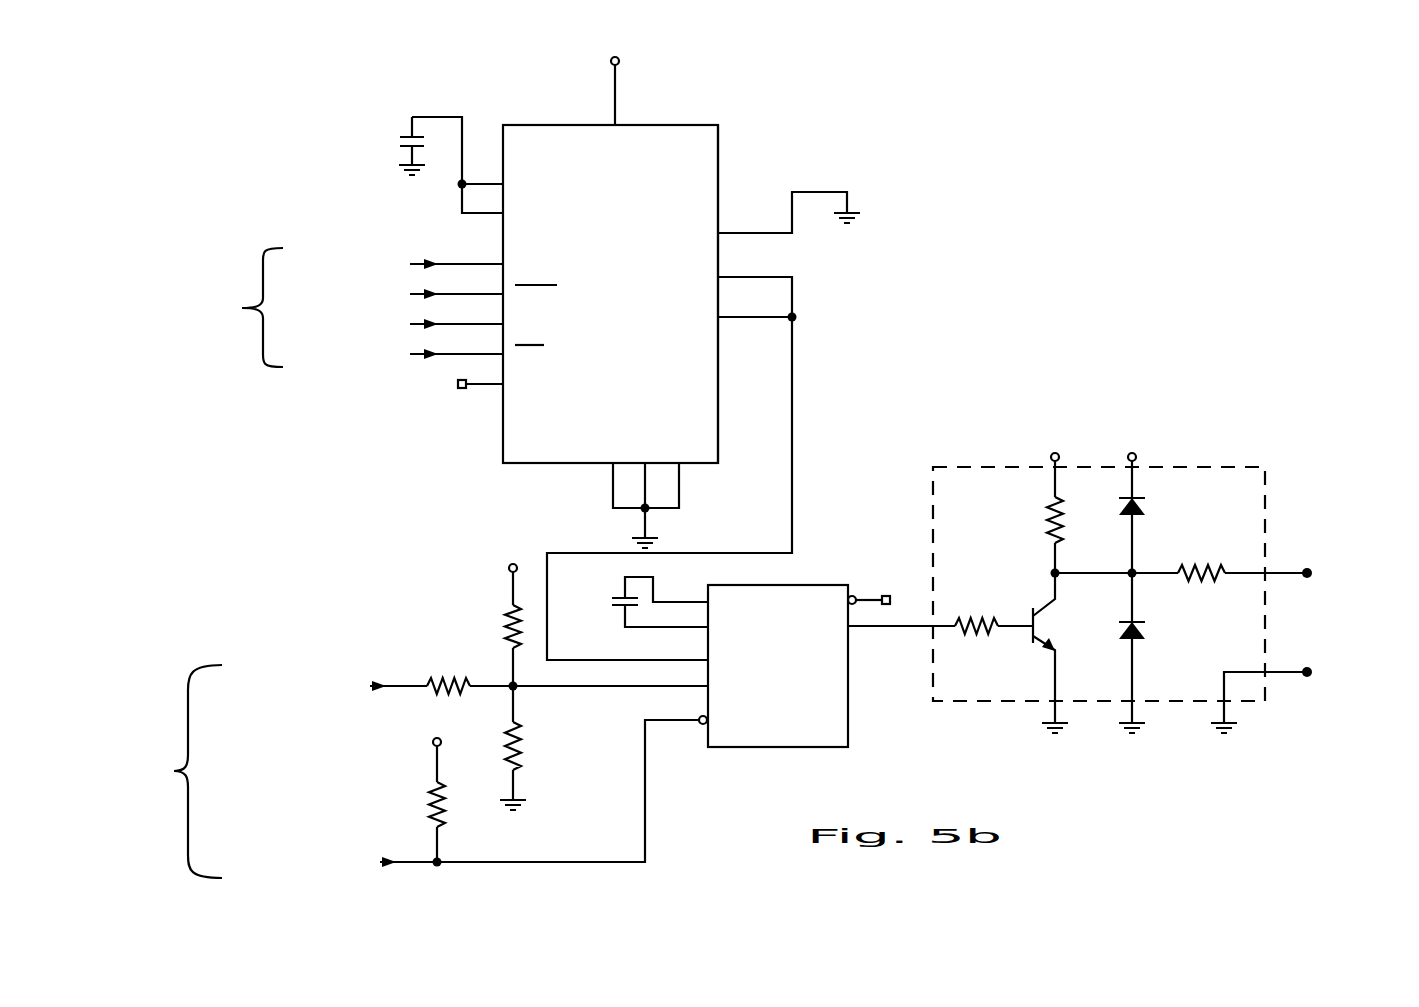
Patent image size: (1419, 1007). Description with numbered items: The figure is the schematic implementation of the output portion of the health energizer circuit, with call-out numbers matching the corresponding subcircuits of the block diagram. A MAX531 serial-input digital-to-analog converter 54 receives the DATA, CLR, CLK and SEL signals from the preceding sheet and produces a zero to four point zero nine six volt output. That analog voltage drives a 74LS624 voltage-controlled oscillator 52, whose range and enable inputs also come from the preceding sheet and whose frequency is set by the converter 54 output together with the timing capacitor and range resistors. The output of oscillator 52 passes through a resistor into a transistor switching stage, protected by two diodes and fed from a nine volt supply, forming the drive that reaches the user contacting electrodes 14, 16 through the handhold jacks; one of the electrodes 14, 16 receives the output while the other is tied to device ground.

The digital-to-analog converter 54 is at (651, 365).
The voltage-controlled oscillator 52 is at (822, 715).
The user contacting electrode 14 is at (1333, 586).
The user contacting electrode 16 is at (1301, 683).